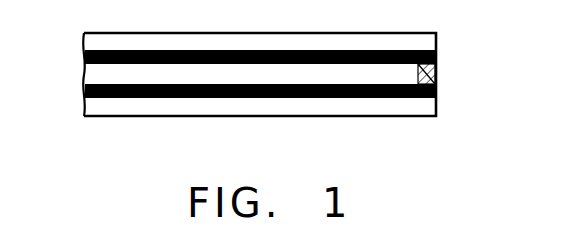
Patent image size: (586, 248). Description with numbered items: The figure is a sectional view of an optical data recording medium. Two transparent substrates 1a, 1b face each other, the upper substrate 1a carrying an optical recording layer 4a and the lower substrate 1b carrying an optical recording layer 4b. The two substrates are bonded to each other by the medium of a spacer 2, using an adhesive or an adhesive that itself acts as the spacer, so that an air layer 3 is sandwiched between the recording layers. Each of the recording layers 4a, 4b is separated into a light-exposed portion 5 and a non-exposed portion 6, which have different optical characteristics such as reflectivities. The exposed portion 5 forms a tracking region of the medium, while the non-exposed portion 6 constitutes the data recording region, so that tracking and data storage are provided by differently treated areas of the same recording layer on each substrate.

The transparent substrate 1a is at (433, 43).
The transparent substrate 1b is at (433, 107).
The spacer 2 is at (437, 77).
The air layer 3 is at (274, 86).
The optical recording layer 4a is at (290, 100).
The optical recording layer 4b is at (436, 87).
The light-exposed portion 5 is at (226, 97).
The non-exposed portion 6 is at (336, 97).